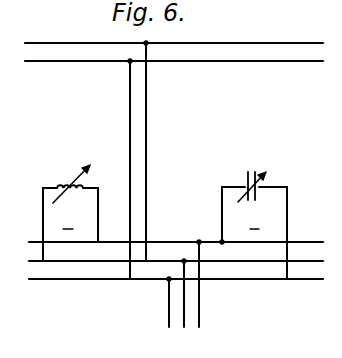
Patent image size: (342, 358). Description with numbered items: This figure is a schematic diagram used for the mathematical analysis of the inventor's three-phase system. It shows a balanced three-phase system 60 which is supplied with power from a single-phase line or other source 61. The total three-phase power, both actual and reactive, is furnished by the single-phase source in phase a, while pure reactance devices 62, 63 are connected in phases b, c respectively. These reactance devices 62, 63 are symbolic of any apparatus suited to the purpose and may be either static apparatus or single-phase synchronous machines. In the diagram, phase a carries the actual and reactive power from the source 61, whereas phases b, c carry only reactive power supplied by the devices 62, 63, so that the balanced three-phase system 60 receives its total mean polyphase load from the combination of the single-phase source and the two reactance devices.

The balanced three-phase system 60 is at (251, 245).
The single-phase line or other source 61 is at (284, 54).
The pure reactance device 62 is at (72, 181).
The pure reactance device 63 is at (246, 184).
The phase a is at (142, 167).
The phase b is at (68, 221).
The phase c is at (254, 221).